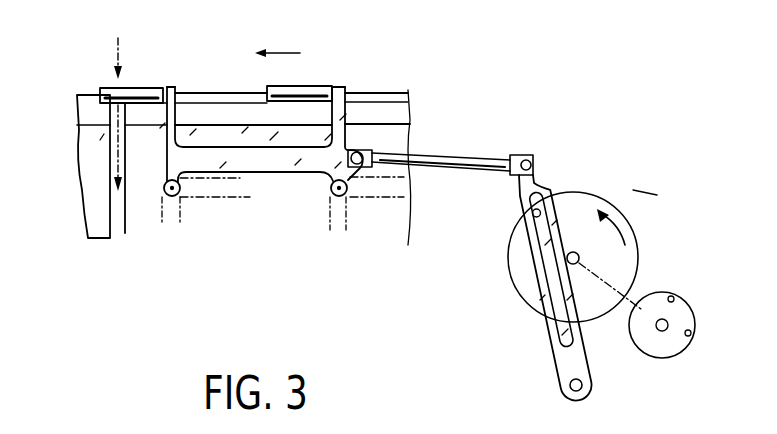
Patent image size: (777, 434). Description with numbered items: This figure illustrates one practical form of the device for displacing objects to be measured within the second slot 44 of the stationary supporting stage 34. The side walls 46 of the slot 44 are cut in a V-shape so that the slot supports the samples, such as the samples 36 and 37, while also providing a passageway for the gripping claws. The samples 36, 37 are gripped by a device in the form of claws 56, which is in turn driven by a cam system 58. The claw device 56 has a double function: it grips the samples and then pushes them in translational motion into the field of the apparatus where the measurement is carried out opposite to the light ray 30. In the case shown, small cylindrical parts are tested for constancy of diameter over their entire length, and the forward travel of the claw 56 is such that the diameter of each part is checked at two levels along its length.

The light ray 30 is at (116, 53).
The stationary supporting stage 34 is at (98, 239).
The sample 36 is at (148, 87).
The sample 37 is at (312, 88).
The second slot 44 is at (403, 114).
The side walls 46 is at (398, 95).
The claw device 56 is at (334, 111).
The cam system 58 is at (523, 333).